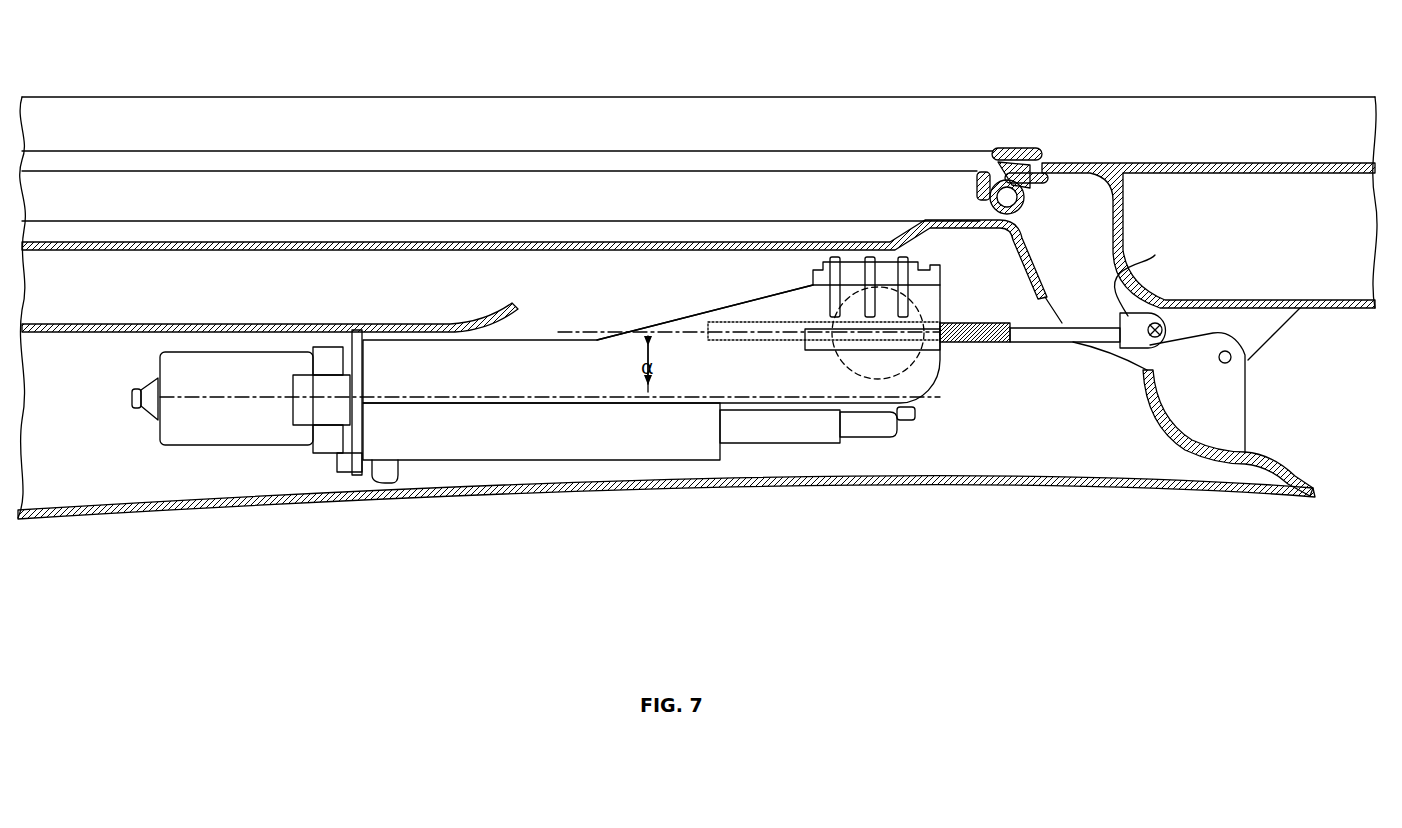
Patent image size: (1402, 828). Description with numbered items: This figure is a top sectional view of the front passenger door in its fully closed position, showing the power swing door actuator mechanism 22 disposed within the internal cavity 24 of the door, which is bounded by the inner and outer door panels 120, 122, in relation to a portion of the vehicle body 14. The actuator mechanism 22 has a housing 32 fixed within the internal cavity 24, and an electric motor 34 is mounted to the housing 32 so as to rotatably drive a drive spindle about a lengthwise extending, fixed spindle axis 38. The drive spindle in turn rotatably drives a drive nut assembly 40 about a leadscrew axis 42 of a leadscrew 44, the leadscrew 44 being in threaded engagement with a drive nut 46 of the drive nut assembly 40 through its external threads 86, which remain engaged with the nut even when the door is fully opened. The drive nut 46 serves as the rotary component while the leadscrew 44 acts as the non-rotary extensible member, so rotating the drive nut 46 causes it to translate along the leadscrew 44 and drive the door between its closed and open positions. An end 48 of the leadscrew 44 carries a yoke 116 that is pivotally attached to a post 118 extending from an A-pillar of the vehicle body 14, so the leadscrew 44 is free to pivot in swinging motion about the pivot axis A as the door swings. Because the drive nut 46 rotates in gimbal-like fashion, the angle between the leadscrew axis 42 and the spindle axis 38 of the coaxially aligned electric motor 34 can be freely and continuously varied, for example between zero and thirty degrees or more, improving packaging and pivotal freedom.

The vehicle body 14 is at (1286, 254).
The power swing door actuator mechanism 22 is at (147, 474).
The internal cavity 24 is at (224, 406).
The housing 32 is at (697, 314).
The electric motor 34 is at (165, 362).
The spindle axis 38 is at (752, 397).
The drive nut assembly 40 is at (955, 368).
The leadscrew axis 42 is at (593, 331).
The leadscrew 44 is at (1040, 345).
The drive nut 46 is at (928, 378).
The end of the leadscrew 48 is at (1148, 262).
The leadscrew external threads 86 is at (965, 318).
The yoke 116 is at (1138, 322).
The post 118 is at (1257, 327).
The inner door panel 120 is at (434, 242).
The outer door panel 122 is at (440, 497).
The pivot axis A is at (1160, 350).